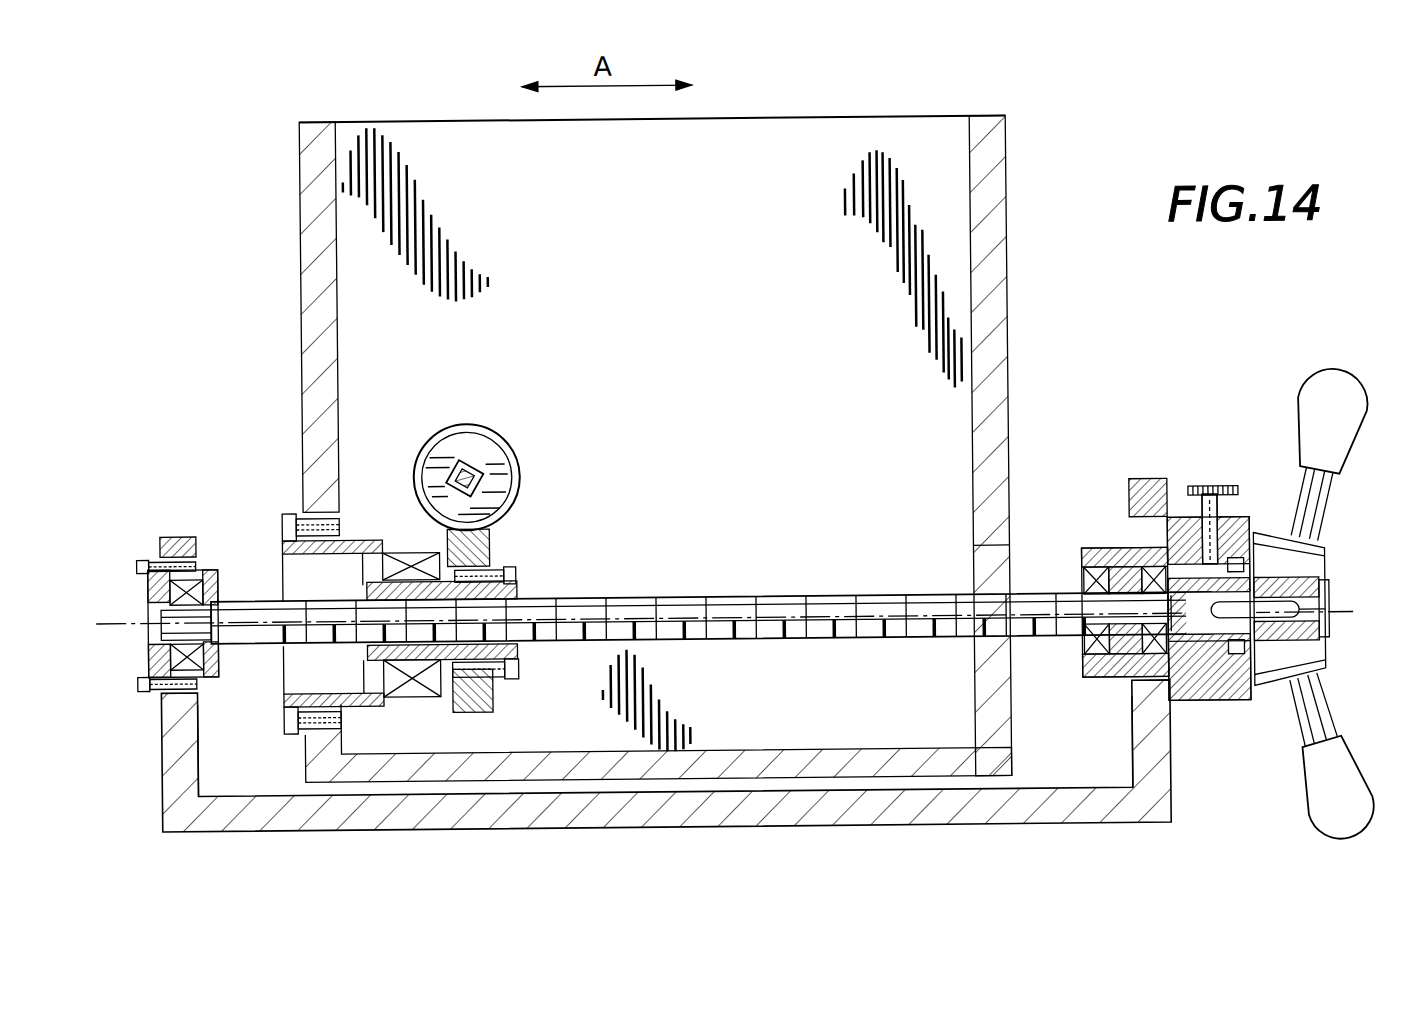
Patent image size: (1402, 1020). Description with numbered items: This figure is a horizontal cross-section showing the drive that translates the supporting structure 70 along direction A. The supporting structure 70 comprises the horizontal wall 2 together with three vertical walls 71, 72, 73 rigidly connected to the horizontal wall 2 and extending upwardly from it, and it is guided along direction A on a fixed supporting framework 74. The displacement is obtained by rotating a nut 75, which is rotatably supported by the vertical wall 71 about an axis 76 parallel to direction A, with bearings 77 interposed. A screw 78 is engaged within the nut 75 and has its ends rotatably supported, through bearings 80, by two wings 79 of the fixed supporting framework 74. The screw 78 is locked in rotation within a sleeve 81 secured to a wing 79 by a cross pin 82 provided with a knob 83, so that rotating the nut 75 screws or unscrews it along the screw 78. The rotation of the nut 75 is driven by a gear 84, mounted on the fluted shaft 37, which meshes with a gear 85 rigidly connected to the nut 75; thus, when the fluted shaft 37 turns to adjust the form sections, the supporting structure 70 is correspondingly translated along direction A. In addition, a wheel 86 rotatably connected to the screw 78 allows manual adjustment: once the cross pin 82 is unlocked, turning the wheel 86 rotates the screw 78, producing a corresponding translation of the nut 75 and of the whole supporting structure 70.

The horizontal wall 2 is at (444, 147).
The fluted shaft 37 is at (466, 468).
The supporting structure 70 is at (296, 288).
The vertical wall 71 is at (314, 366).
The vertical wall 72 is at (697, 748).
The vertical wall 73 is at (998, 233).
The fixed supporting framework 74 is at (1178, 773).
The nut 75 is at (520, 595).
The axis 76 is at (700, 625).
The bearings 77 is at (410, 542).
The screw 78 is at (796, 608).
The wings 79 is at (188, 755).
The bearings 80 is at (207, 555).
The sleeve 81 is at (1251, 523).
The cross pin 82 is at (1326, 554).
The knob 83 is at (1202, 485).
The gear 84 is at (500, 460).
The gear 85 is at (491, 690).
The wheel 86 is at (1348, 375).